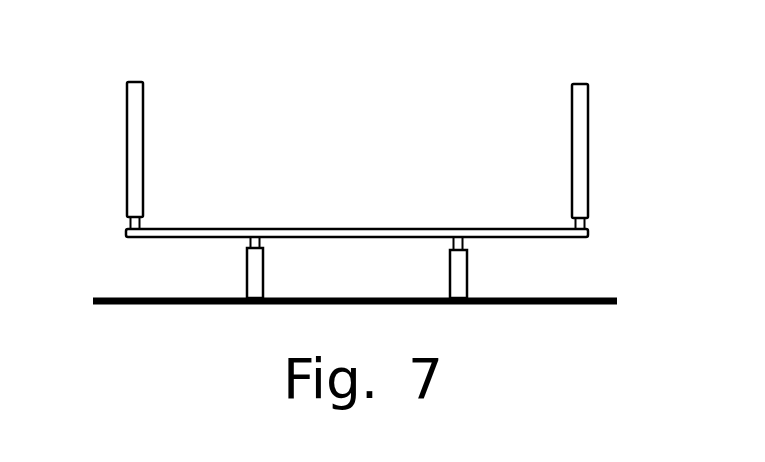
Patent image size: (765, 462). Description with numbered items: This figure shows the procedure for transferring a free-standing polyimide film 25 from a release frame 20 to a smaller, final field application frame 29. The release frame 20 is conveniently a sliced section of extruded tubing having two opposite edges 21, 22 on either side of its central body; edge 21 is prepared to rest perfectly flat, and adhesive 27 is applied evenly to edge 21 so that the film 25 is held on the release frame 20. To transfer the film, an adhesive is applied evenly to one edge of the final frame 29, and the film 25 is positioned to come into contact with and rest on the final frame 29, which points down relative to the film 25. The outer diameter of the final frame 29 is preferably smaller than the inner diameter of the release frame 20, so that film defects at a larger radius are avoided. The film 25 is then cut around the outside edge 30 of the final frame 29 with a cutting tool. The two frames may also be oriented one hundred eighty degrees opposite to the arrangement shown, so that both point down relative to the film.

The release frame 20 is at (126, 143).
The edge 22 is at (590, 96).
The edge 21 is at (590, 205).
The adhesive 27 is at (128, 222).
The film 25 is at (368, 228).
The final frame 29 is at (245, 262).
The outside edge 30 is at (465, 240).